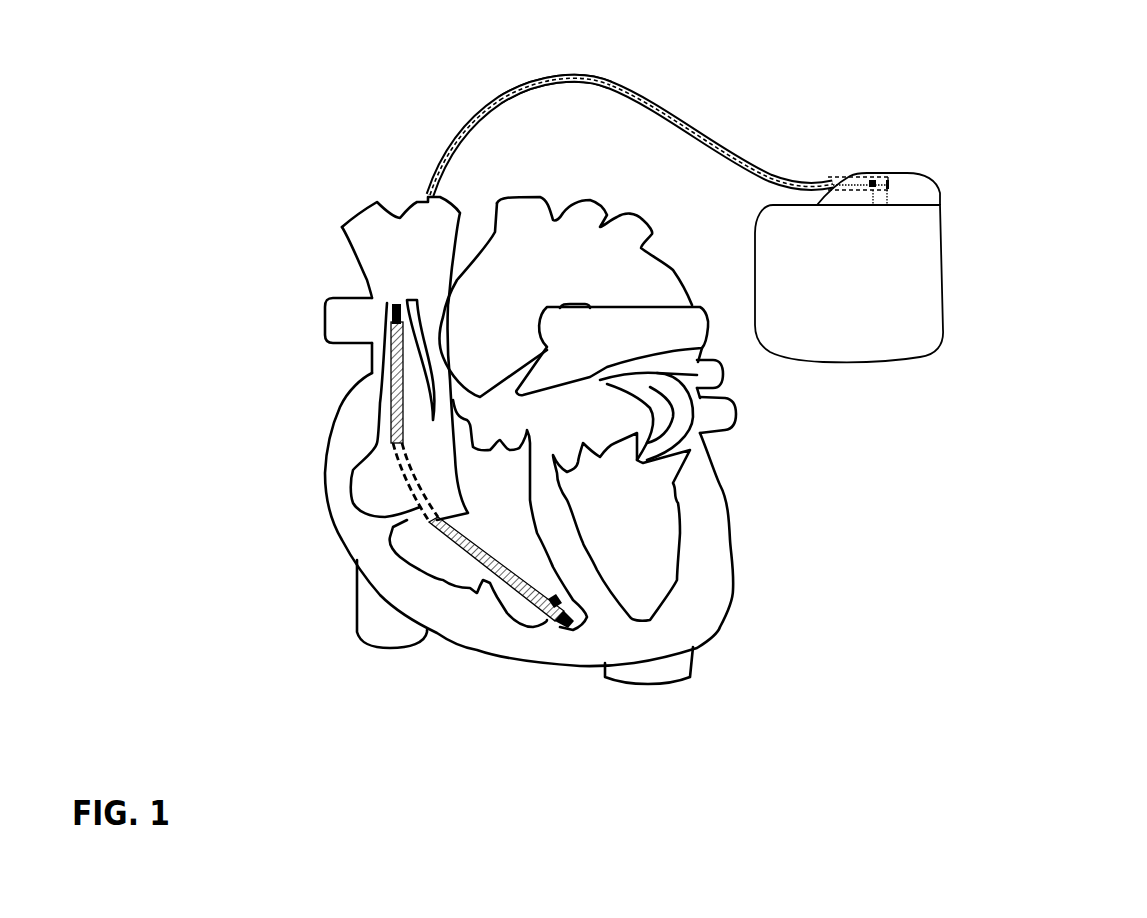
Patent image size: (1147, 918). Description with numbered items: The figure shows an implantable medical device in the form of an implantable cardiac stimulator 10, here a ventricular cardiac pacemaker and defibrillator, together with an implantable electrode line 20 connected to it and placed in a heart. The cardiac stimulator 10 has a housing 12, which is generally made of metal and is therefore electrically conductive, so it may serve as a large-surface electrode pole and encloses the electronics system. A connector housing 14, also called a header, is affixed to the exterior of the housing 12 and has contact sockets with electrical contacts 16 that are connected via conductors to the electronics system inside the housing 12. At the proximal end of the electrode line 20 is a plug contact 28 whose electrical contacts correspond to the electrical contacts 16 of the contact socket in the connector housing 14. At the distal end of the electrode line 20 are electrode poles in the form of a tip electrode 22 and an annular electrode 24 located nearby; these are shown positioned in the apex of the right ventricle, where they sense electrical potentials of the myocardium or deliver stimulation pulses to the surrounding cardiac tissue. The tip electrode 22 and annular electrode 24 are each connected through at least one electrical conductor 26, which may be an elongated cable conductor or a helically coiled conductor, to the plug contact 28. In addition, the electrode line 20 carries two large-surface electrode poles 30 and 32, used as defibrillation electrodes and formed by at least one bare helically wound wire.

The implantable cardiac stimulator 10 is at (939, 278).
The housing 12 is at (852, 325).
The connector housing 14 is at (910, 187).
The electrical contacts 16 is at (893, 182).
The implantable electrode line 20 is at (453, 140).
The tip electrode 22 is at (571, 625).
The annular electrode 24 is at (550, 617).
The electrical conductor 26 is at (520, 86).
The plug contact 28 is at (860, 180).
The large-surface electrode pole 30 is at (462, 548).
The large-surface electrode pole 32 is at (395, 372).